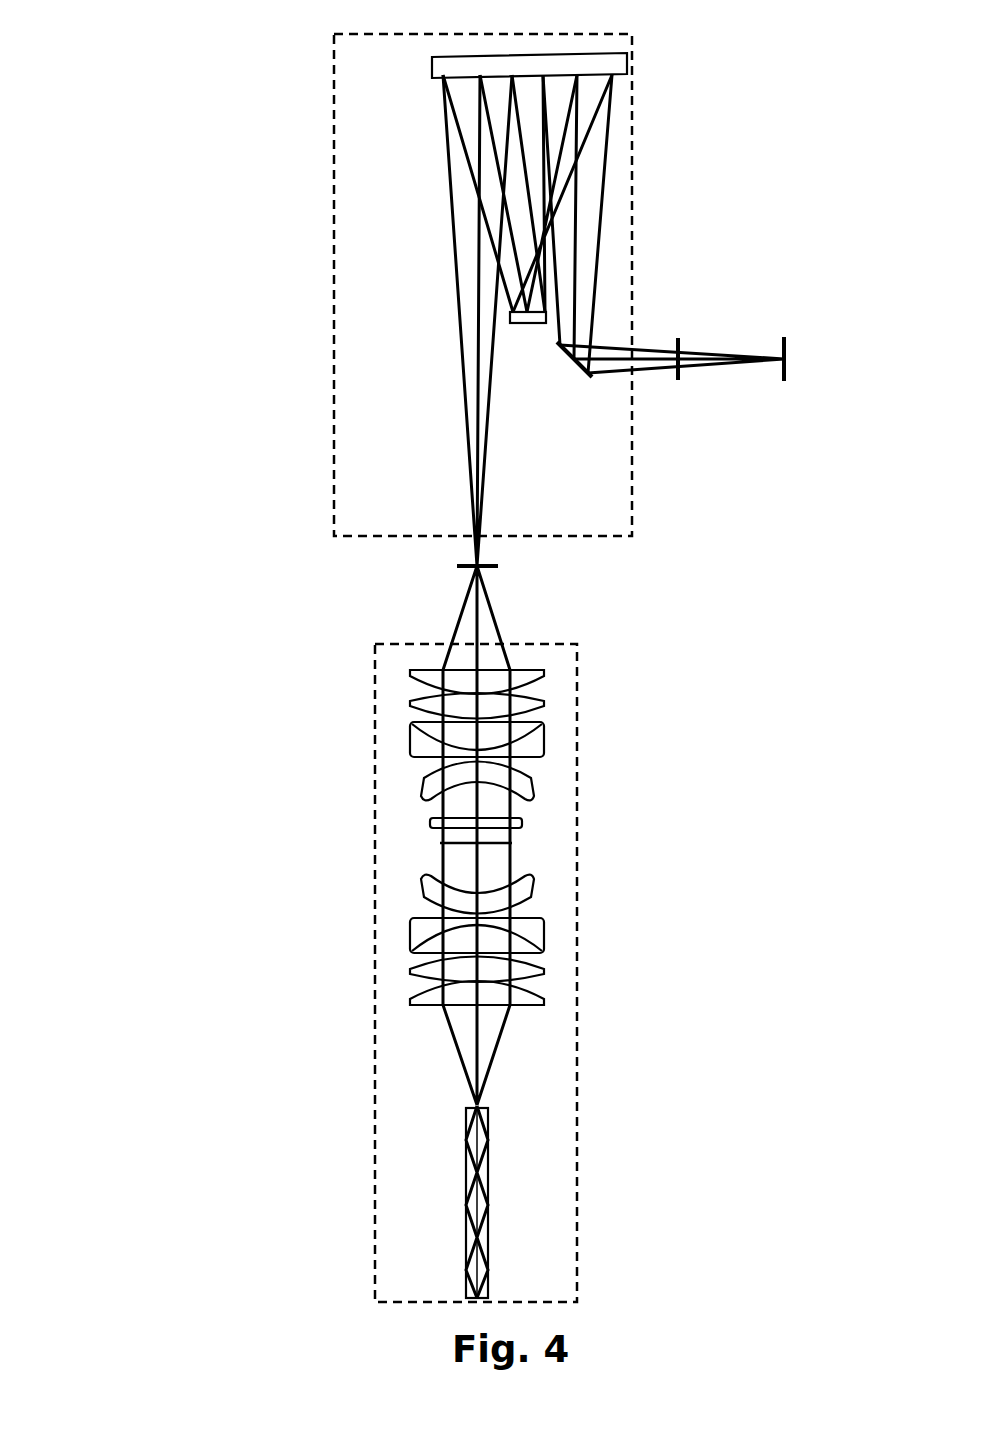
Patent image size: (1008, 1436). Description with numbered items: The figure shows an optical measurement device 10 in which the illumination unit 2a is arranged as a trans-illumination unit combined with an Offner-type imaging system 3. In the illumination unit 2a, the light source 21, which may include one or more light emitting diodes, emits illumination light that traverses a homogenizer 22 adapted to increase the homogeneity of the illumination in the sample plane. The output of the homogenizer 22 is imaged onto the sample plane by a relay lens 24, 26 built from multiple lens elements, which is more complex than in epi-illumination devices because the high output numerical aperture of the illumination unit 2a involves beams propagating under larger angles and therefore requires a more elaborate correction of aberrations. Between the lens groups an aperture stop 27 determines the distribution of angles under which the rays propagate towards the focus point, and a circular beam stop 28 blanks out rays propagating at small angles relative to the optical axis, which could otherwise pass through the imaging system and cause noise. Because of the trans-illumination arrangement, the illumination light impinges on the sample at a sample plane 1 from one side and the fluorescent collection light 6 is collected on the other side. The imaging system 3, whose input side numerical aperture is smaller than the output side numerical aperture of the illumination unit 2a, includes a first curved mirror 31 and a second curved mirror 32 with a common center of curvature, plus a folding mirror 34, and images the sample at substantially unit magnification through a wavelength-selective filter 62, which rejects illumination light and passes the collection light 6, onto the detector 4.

The optical system 10 is at (190, 146).
The imaging system 3 is at (360, 98).
The first curved mirror 31 is at (612, 60).
The second curved mirror 32 is at (528, 324).
The folding mirror 34 is at (584, 383).
The collection light 6 is at (612, 237).
The wavelength-selective filter 62 is at (680, 335).
The detector 4 is at (790, 360).
The intermediate image / aperture 1 is at (503, 566).
The illumination unit 2a is at (563, 668).
The relay lens 26 is at (406, 742).
The aperture stop 27 is at (425, 821).
The circular beam stop 28 is at (527, 845).
The relay lens 24 is at (548, 958).
The homogenizer 22 is at (472, 1238).
The light source 21 is at (496, 1296).